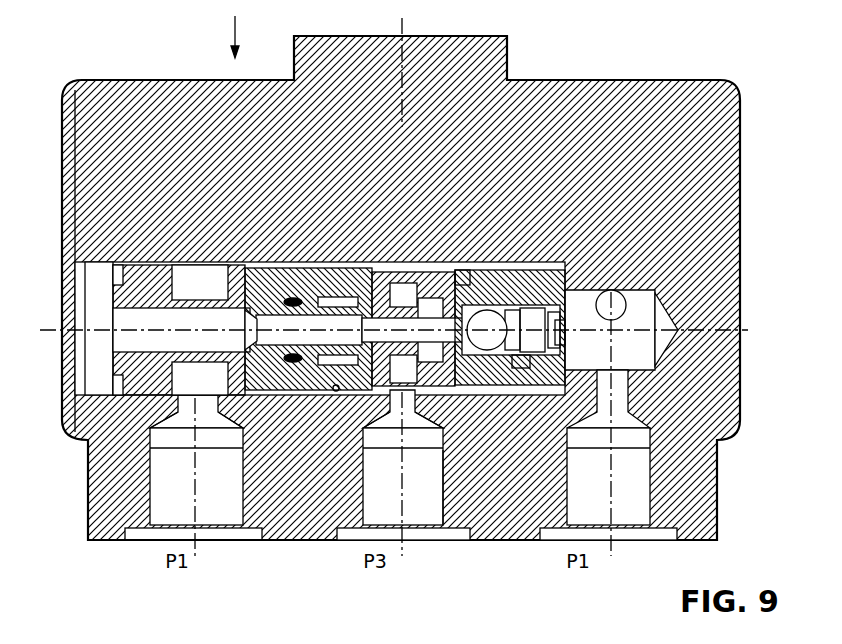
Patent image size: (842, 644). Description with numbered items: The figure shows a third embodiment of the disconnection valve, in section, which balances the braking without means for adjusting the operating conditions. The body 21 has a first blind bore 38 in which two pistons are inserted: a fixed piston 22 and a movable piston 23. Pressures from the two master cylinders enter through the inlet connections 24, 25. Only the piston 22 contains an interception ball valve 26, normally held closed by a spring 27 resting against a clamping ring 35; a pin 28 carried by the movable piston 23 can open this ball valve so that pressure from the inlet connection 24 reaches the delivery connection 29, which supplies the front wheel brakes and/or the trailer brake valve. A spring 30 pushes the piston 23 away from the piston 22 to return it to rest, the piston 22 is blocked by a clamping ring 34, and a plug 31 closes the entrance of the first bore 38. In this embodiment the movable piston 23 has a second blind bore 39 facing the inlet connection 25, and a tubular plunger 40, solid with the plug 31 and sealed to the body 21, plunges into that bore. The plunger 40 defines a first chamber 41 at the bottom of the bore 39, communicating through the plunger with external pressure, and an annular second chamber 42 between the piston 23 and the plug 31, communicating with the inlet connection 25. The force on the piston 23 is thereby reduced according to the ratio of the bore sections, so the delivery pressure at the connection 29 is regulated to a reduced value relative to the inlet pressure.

The body 21 is at (171, 116).
The piston 22 is at (549, 270).
The movable piston 23 is at (366, 272).
The inlet connection 24 is at (577, 493).
The inlet connection 25 is at (163, 518).
The interception ball valve 26 is at (487, 348).
The spring 27 is at (520, 370).
The pin 28 is at (459, 272).
The delivery connection 29 is at (393, 516).
The spring 30 is at (397, 428).
The plug 31 is at (165, 272).
The clamping ring 34 is at (443, 494).
The clamping ring 35 is at (563, 346).
The first blind bore 38 is at (270, 268).
The second blind bore 39 is at (336, 392).
The tubular plunger 40 is at (212, 432).
The first chamber 41 is at (412, 430).
The second chamber 42 is at (182, 432).